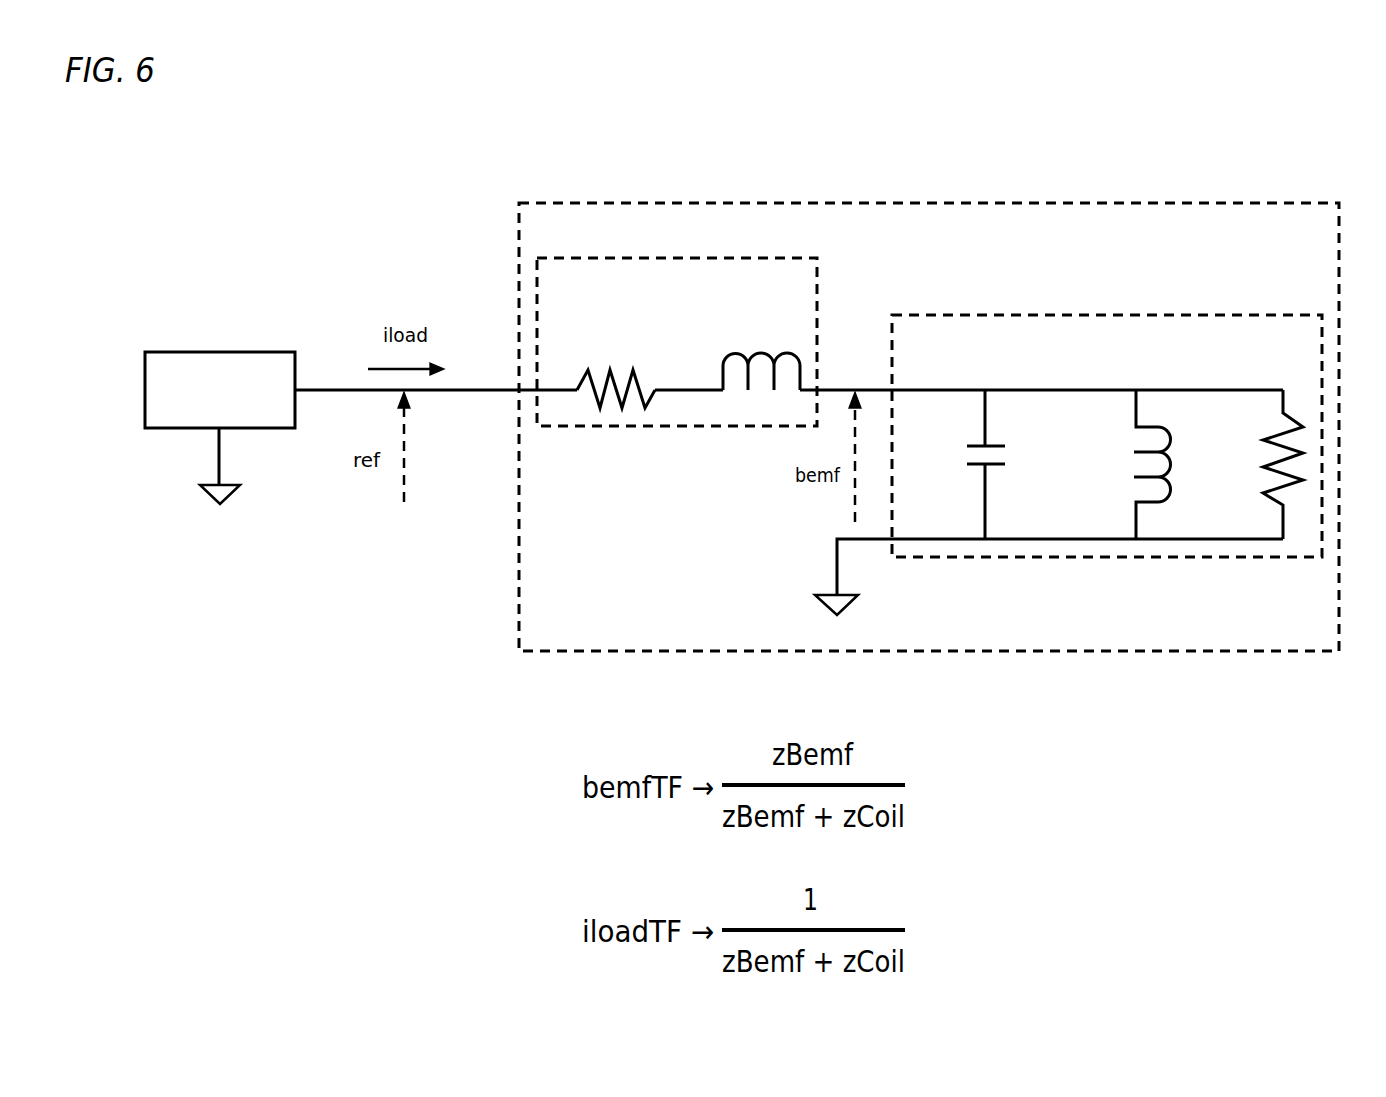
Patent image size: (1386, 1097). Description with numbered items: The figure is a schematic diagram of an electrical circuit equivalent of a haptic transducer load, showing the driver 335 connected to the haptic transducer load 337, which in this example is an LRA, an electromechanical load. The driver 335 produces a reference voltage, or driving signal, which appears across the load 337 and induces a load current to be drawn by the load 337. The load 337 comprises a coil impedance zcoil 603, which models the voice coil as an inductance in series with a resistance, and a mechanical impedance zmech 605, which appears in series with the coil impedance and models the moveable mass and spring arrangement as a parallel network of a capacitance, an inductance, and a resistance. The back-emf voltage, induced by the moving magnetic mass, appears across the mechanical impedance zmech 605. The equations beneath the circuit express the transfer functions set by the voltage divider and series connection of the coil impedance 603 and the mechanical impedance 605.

The driver 335 is at (285, 403).
The coil impedance zcoil 603 is at (721, 297).
The haptic transducer load 337 is at (1101, 267).
The mechanical impedance zmech 605 is at (1161, 363).